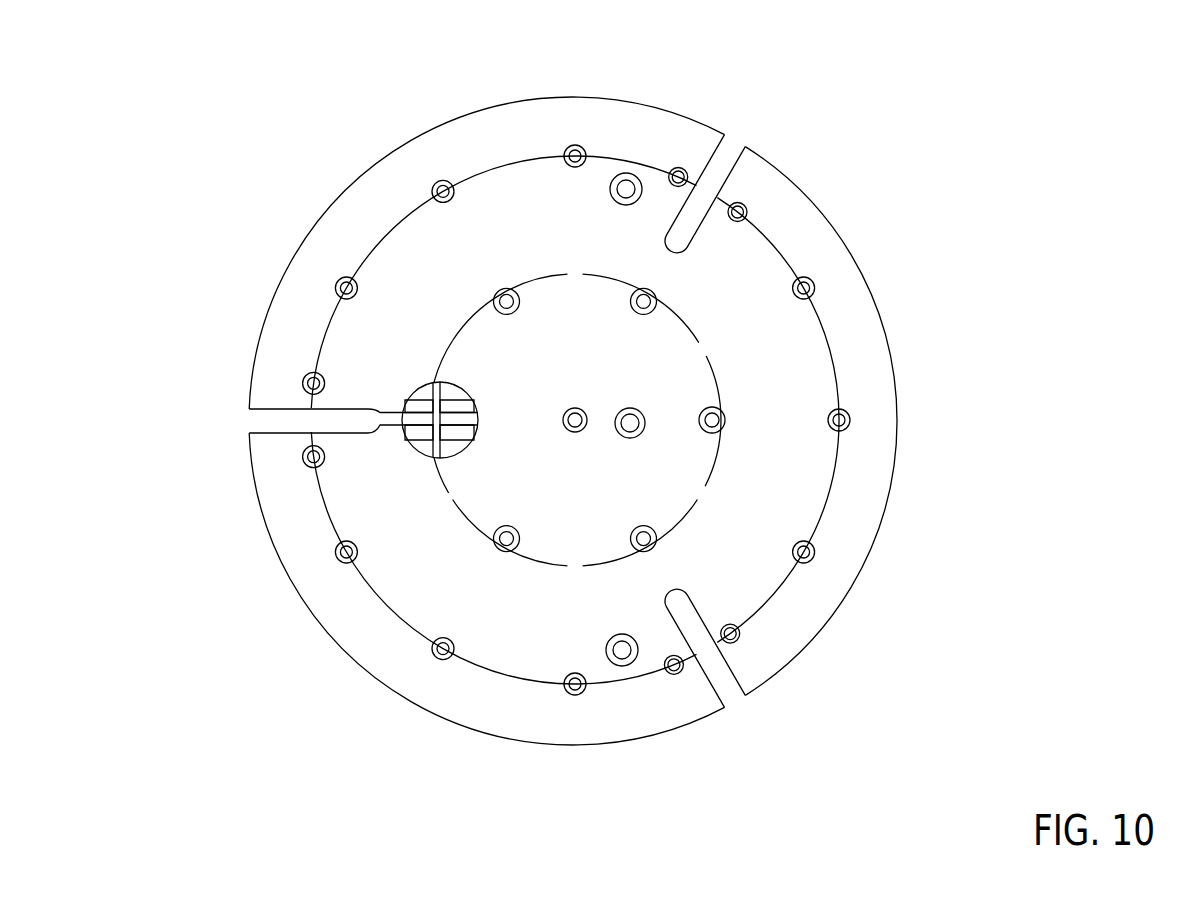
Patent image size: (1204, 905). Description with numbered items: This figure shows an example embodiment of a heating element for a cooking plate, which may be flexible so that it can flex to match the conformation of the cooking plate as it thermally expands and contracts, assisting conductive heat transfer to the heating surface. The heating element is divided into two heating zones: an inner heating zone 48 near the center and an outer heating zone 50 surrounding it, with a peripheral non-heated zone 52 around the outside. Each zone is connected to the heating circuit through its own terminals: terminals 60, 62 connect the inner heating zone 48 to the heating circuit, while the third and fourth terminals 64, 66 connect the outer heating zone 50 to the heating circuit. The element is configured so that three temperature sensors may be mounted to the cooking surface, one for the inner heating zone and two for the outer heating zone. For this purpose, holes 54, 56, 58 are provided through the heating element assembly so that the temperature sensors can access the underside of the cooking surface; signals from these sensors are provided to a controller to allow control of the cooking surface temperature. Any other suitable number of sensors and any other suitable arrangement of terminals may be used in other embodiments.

The inner heating zone 48 is at (500, 358).
The outer heating zone 50 is at (488, 227).
The peripheral non-heated zone 52 is at (605, 125).
The hole 54 is at (630, 408).
The hole 56 is at (623, 643).
The hole 58 is at (618, 186).
The terminal 60 is at (415, 442).
The terminal 62 is at (413, 398).
The third terminal 64 is at (448, 412).
The fourth terminal 66 is at (457, 447).